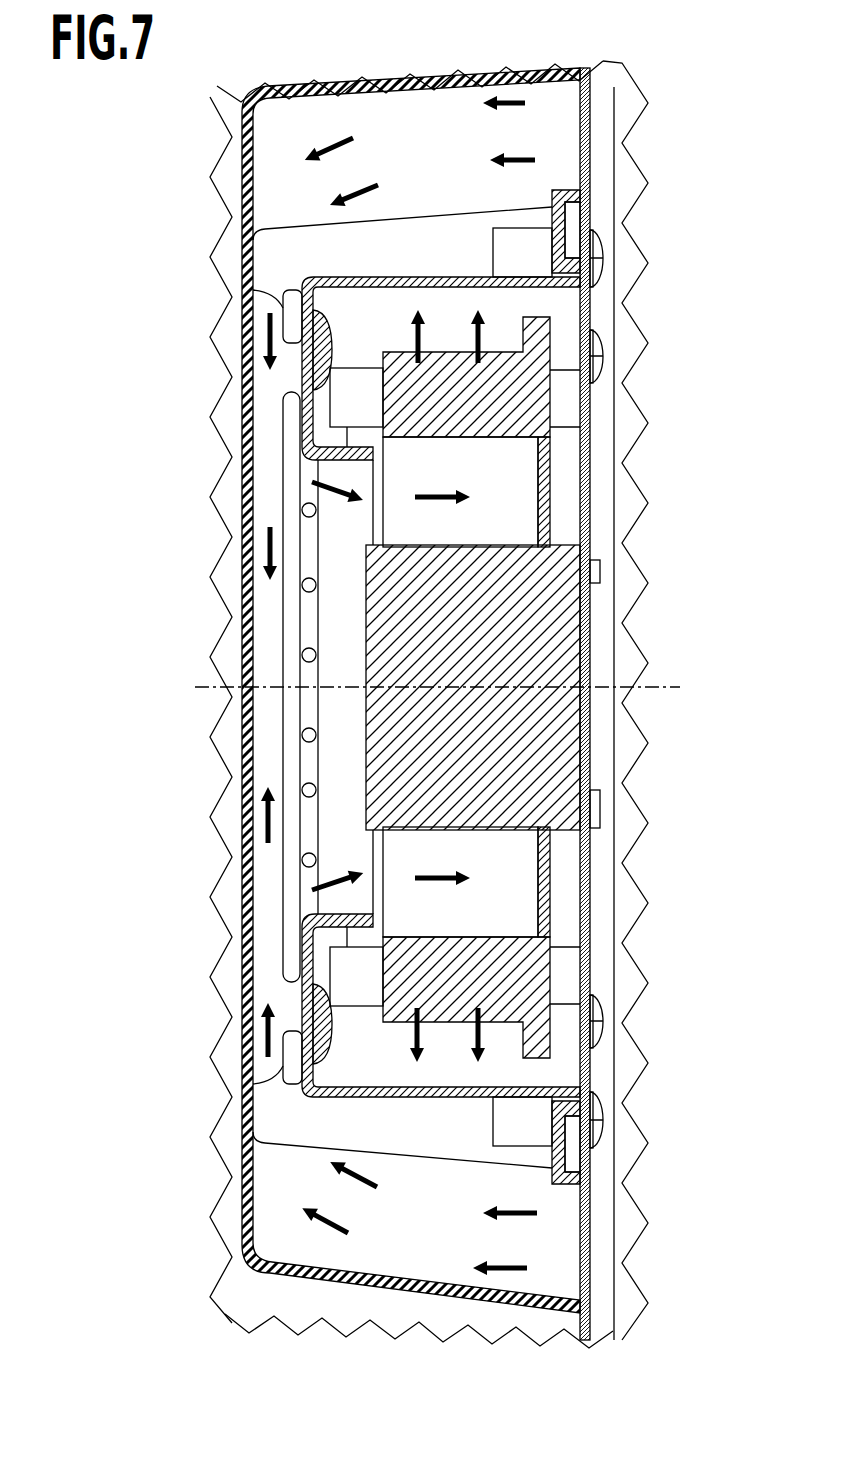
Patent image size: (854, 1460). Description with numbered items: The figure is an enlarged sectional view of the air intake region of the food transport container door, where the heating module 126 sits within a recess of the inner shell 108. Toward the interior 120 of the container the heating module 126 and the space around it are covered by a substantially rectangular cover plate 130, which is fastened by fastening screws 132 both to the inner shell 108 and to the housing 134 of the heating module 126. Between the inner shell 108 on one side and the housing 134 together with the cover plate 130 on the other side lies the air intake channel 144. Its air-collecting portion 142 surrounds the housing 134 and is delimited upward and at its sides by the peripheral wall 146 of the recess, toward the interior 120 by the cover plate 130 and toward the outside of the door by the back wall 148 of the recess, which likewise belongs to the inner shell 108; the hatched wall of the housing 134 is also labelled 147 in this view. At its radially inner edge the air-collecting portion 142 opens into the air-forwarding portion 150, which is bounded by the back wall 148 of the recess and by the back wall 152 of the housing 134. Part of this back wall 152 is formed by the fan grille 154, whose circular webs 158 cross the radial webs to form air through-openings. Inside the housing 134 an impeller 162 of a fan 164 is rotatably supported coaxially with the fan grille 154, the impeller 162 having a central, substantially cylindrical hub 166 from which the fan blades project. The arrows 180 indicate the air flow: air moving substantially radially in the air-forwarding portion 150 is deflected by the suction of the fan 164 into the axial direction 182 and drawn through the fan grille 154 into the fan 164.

The inner shell 108 is at (246, 860).
The interior 120 is at (617, 490).
The heating module 126 is at (606, 776).
The cover plate 130 is at (585, 923).
The fastening screws 132 is at (597, 343).
The housing 134 is at (308, 1002).
The air-collecting portion 142 is at (468, 202).
The air intake channel 144 is at (270, 437).
The peripheral wall 146 is at (333, 92).
The inner housing pot 147 is at (453, 278).
The back wall 148 is at (245, 224).
The air-forwarding portion 150 is at (281, 476).
The back wall 152 is at (305, 400).
The fan grille 154 is at (303, 720).
The circular webs 158 is at (303, 512).
The impeller 162 is at (592, 572).
The fan 164 is at (352, 648).
The hub 166 is at (553, 740).
The arrows 180 is at (517, 104).
The axial direction 182 is at (642, 687).